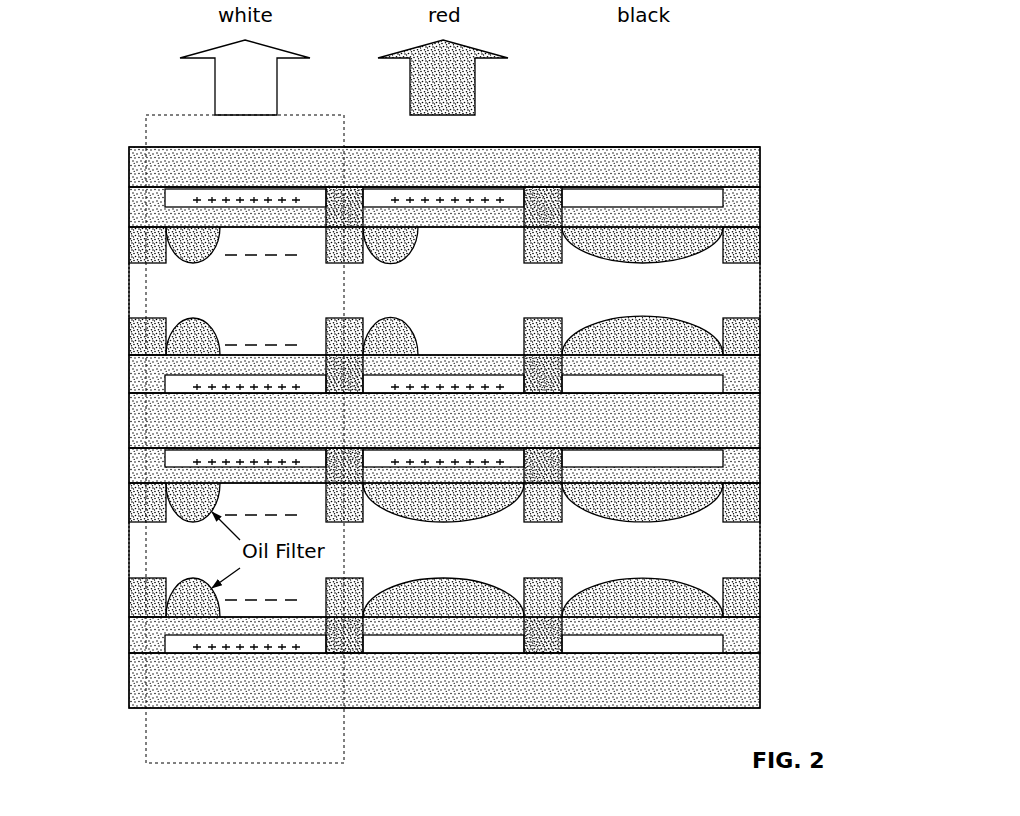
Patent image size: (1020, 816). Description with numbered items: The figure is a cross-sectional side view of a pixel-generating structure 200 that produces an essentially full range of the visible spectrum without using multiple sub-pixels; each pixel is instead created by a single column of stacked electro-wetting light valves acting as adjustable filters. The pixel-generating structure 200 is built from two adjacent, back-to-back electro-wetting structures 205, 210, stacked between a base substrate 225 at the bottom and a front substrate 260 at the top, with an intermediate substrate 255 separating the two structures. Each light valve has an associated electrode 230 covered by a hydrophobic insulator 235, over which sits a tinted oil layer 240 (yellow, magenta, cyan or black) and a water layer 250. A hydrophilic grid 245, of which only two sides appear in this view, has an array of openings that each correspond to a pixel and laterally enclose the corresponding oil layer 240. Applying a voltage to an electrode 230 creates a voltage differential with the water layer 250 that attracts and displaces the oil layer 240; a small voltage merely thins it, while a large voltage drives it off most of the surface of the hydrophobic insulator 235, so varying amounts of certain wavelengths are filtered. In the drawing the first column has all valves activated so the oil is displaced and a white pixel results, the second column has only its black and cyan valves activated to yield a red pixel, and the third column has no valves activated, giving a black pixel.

The pixel-generating structure 200 is at (767, 67).
The electro-wetting structure 205 is at (740, 558).
The electro-wetting structure 210 is at (737, 268).
The base substrate 225 is at (140, 678).
The electrode 230 is at (510, 390).
The hydrophobic insulator 235 is at (763, 372).
The tinted oil layer 240 is at (397, 318).
The hydrophilic grid 245 is at (548, 325).
The water layer 250 is at (444, 427).
The intermediate substrate 255 is at (752, 412).
The front substrate 260 is at (150, 177).